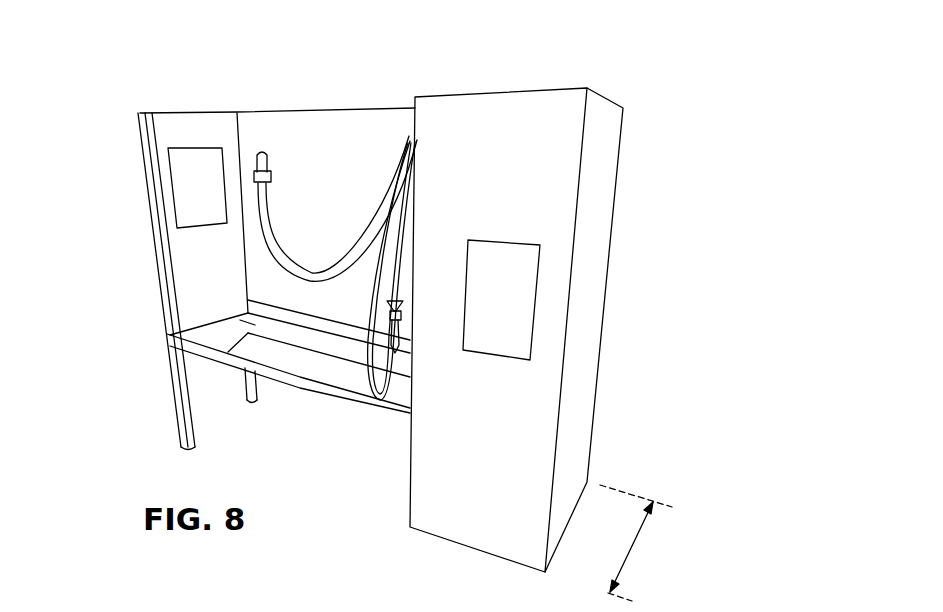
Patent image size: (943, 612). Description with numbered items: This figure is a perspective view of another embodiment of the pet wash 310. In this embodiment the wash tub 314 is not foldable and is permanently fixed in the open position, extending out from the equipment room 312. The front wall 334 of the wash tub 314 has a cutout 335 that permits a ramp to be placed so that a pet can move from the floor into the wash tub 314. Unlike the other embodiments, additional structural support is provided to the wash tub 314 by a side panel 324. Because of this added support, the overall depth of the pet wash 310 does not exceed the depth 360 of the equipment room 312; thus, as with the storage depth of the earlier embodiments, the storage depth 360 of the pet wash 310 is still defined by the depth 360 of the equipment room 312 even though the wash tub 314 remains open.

The pet wash 310 is at (434, 308).
The equipment room 312 is at (523, 88).
The wash tub 314 is at (350, 381).
The side panel 324 is at (185, 178).
The front wall 334 is at (277, 372).
The cutout 335 is at (218, 342).
The depth 360 is at (637, 534).